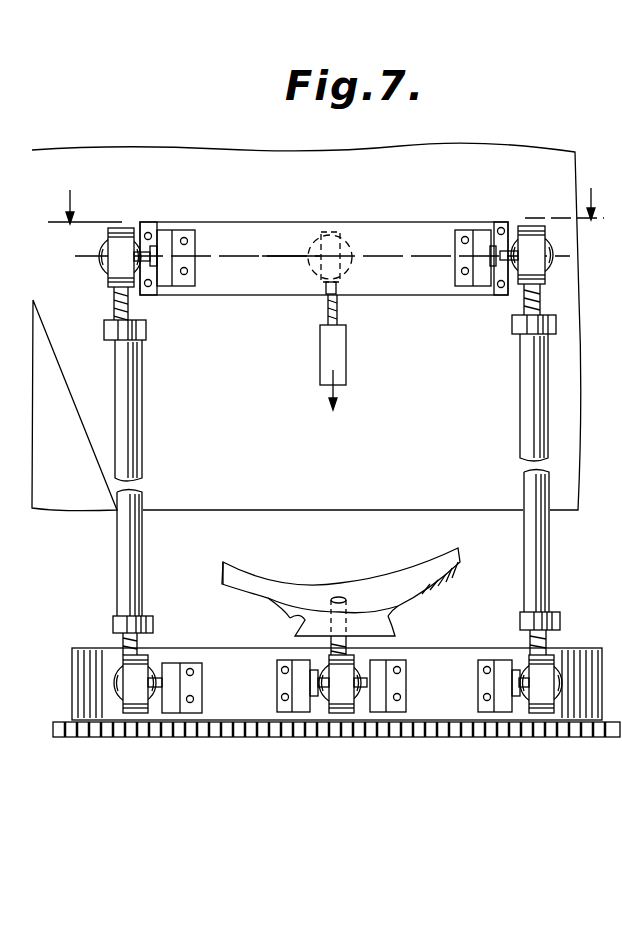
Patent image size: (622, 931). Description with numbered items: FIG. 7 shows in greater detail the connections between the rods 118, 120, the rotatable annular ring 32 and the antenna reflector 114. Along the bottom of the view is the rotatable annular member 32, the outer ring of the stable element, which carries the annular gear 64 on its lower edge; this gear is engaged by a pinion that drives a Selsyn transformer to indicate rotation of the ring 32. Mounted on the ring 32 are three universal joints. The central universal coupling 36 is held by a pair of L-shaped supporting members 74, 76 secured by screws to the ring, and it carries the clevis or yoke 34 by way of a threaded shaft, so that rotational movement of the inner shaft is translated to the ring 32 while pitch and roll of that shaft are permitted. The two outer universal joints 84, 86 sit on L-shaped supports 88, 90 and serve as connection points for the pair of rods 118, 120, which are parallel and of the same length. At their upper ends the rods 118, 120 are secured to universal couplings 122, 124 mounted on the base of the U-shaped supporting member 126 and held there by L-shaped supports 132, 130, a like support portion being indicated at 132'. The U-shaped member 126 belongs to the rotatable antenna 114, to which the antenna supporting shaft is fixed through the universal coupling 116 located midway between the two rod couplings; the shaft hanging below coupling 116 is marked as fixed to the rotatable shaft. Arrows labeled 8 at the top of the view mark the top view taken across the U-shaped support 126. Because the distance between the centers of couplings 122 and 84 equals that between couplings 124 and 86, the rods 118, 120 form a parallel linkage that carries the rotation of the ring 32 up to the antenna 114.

The section line for Fig. 8 is at (326, 193).
The rotatable antenna 114 is at (240, 186).
The U-shaped supporting member 126 is at (252, 296).
The L-shaped support 130 is at (168, 240).
The L-shaped support 132 is at (463, 273).
The clamp block pivot 132' is at (271, 276).
The universal coupling 124 is at (110, 237).
The universal coupling 122 is at (532, 240).
The universal coupling 116 is at (345, 238).
The rod 120 is at (120, 378).
The rod 118 is at (523, 379).
The clevis or yoke 34 is at (312, 582).
The rotatable annular member 32 is at (80, 680).
The annular gear 64 is at (54, 730).
The universal joint 86 is at (138, 684).
The L-shaped support 90 is at (190, 684).
The L-shaped supporting member 76 is at (298, 680).
The universal coupling 36 is at (345, 690).
The L-shaped supporting member 74 is at (384, 684).
The L-shaped support 88 is at (486, 680).
The universal joint 84 is at (545, 690).